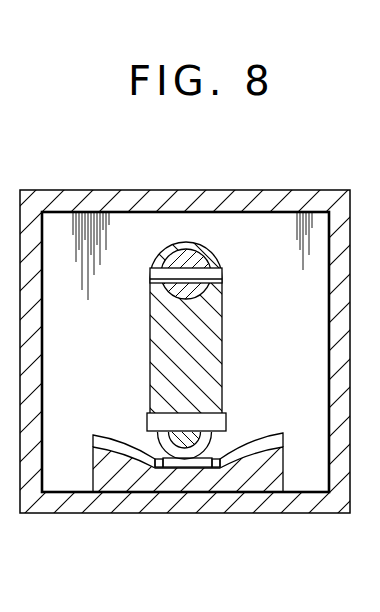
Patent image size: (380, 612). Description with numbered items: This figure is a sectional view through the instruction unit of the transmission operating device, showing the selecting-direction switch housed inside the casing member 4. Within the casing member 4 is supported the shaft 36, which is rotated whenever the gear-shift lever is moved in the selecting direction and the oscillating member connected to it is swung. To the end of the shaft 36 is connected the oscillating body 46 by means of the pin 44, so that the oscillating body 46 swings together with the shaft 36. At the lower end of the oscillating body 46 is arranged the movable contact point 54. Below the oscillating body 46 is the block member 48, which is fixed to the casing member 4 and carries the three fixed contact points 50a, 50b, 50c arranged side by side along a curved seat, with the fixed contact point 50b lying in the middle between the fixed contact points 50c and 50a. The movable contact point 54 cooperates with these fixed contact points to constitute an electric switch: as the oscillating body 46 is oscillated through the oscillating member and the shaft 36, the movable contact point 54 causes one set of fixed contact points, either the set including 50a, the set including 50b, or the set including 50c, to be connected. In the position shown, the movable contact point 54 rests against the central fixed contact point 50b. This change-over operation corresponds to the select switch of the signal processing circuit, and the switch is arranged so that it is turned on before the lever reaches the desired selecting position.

The casing member 4 is at (347, 273).
The shaft 36 is at (172, 264).
The pin 44 is at (214, 274).
The oscillating body 46 is at (220, 363).
The block member 48 is at (98, 471).
The fixed contact point 50a is at (272, 443).
The fixed contact point 50b is at (187, 468).
The fixed contact point 50c is at (114, 442).
The movable contact point 54 is at (208, 441).